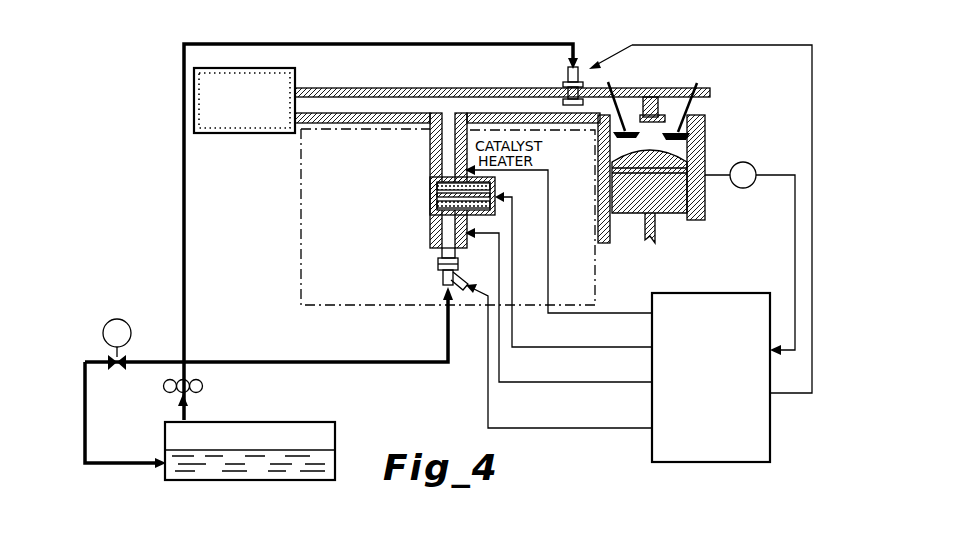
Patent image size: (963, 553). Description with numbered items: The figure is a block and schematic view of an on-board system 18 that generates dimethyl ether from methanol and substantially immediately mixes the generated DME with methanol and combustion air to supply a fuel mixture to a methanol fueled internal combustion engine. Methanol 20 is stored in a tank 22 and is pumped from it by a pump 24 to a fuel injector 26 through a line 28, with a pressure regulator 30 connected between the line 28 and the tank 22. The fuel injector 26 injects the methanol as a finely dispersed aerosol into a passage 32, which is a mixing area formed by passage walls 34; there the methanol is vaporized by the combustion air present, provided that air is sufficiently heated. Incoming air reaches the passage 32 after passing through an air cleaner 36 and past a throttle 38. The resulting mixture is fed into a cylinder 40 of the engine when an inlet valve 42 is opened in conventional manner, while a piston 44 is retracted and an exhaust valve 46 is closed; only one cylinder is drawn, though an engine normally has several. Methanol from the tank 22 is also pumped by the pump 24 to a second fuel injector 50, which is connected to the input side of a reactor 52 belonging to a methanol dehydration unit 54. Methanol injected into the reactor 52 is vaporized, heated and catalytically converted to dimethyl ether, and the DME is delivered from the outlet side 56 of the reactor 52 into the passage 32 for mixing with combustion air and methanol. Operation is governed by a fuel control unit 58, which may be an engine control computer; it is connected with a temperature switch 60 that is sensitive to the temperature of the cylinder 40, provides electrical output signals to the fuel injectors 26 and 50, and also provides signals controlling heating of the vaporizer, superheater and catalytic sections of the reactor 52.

The on-board system 18 is at (448, 404).
The methanol 20 is at (330, 462).
The tank 22 is at (305, 420).
The pump 24 is at (170, 392).
The fuel injector 26 is at (565, 74).
The line 28 is at (182, 218).
The pressure regulator 30 is at (117, 372).
The passage 32 is at (462, 103).
The passage walls 34 is at (567, 127).
The air cleaner 36 is at (240, 133).
The throttle 38 is at (328, 104).
The cylinder 40 is at (706, 134).
The inlet valve 42 is at (622, 100).
The piston 44 is at (670, 200).
The exhaust valve 46 is at (680, 95).
The fuel injector 50 is at (437, 258).
The reactor 52 is at (430, 210).
The methanol dehydration unit 54 is at (300, 245).
The outlet side 56 is at (428, 138).
The fuel control unit 58 is at (660, 440).
The temperature switch 60 is at (745, 188).